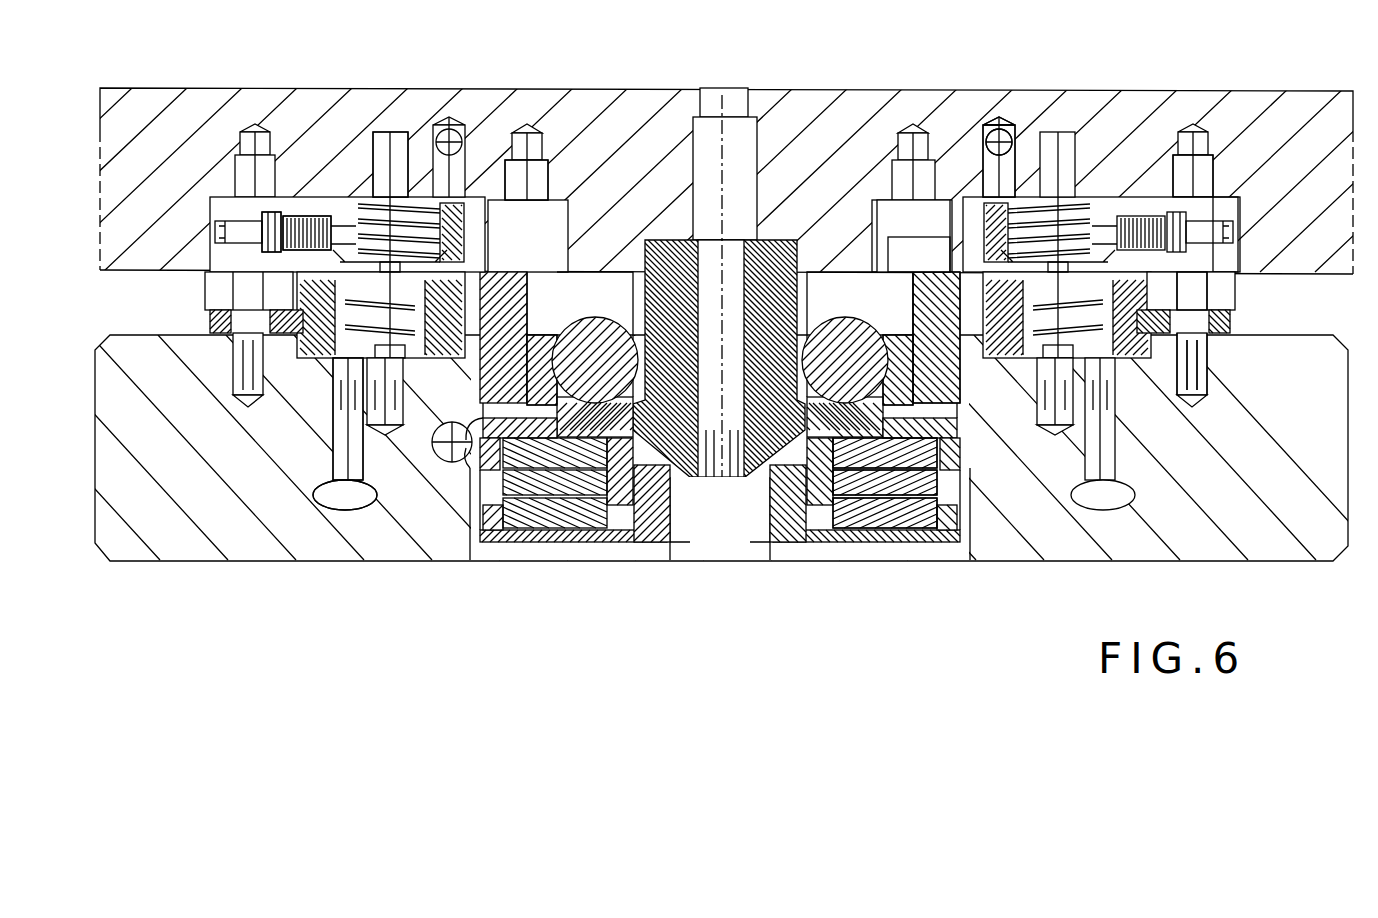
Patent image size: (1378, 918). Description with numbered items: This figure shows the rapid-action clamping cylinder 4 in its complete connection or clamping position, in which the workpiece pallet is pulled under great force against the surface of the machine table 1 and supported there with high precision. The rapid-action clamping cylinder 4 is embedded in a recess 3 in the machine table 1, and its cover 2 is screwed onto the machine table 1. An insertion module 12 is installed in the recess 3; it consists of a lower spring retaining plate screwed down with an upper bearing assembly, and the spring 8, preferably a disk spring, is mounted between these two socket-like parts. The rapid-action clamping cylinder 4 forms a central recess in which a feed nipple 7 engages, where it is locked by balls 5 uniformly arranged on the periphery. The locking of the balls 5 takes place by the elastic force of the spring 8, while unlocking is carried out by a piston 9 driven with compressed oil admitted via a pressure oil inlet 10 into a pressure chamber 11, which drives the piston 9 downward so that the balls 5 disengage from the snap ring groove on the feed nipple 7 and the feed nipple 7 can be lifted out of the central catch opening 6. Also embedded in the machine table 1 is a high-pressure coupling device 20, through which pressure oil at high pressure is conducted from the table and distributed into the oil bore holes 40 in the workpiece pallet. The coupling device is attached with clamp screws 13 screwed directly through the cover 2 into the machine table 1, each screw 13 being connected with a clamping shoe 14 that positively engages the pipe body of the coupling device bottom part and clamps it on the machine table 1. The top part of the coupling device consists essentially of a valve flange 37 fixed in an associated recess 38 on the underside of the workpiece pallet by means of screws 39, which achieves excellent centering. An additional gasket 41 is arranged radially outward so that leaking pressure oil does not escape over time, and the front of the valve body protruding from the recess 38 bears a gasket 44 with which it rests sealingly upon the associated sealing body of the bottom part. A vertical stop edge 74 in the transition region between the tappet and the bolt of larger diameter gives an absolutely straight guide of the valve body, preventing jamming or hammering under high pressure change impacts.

The machine table 1 is at (1240, 530).
The cover 2 is at (210, 287).
The recess 3 is at (478, 415).
The rapid-action clamping cylinder 4 is at (757, 573).
The balls 5 is at (593, 345).
The central catch opening 6 is at (842, 347).
The feed nipple 7 is at (772, 277).
The spring 8 is at (893, 503).
The piston 9 is at (913, 470).
The pressure oil inlet 10 is at (453, 450).
The pressure chamber 11 is at (463, 430).
The insertion module 12 is at (663, 500).
The clamp screws 13 is at (1207, 330).
The clamping shoe 14 is at (1193, 300).
The high-pressure coupling device 20 is at (1097, 183).
The valve flange 37 is at (598, 277).
The recess 38 is at (1250, 250).
The screws 39 is at (248, 145).
The oil bore holes 40 is at (1000, 150).
The gasket 41 is at (298, 203).
The gasket 44 is at (328, 240).
The vertical stop edge 74 is at (408, 203).